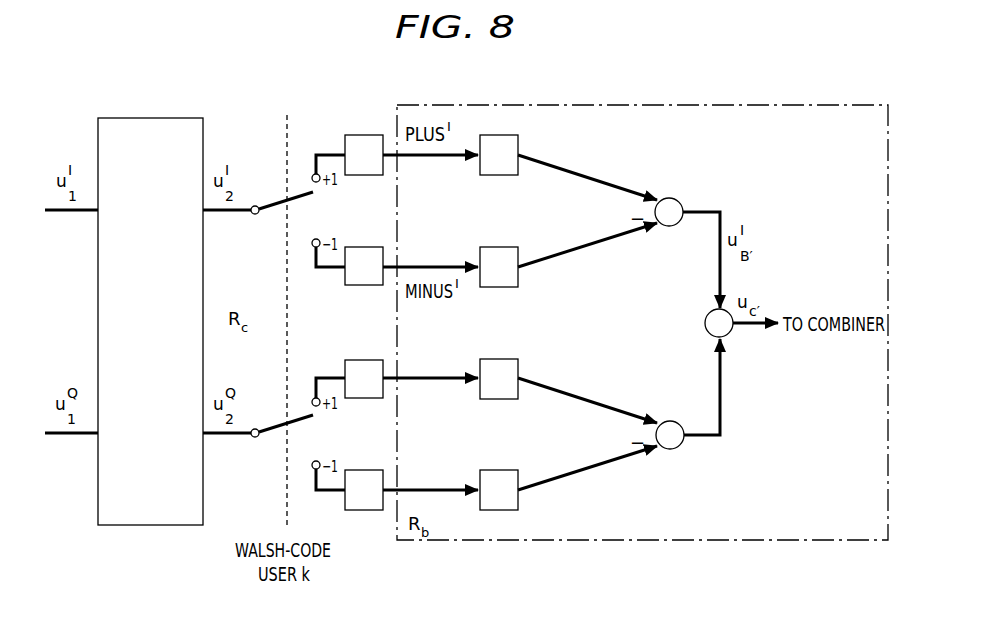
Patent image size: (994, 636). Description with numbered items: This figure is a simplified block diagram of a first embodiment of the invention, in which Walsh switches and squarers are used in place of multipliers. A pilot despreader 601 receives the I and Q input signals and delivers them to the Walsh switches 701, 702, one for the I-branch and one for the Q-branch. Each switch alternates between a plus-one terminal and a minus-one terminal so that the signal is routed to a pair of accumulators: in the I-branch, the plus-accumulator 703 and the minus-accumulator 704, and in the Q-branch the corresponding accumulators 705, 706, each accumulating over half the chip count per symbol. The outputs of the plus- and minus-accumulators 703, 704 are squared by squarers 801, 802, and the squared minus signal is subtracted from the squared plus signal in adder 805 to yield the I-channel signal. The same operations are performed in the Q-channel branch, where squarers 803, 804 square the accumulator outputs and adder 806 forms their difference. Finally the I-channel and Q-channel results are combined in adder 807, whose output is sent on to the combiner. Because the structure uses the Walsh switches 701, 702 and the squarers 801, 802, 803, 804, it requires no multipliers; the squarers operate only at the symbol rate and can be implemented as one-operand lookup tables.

The pilot despreader 601 is at (158, 525).
The Walsh switch 701 is at (264, 204).
The Walsh switch 702 is at (264, 427).
The plus-accumulator 703 is at (345, 139).
The minus-accumulator 704 is at (345, 284).
The accumulator 705 is at (345, 363).
The accumulator 706 is at (363, 510).
The squarer 801 is at (520, 143).
The squarer 802 is at (501, 247).
The squarer 803 is at (501, 359).
The squarer 804 is at (501, 470).
The adder 805 is at (681, 201).
The adder 806 is at (682, 446).
The adder 807 is at (731, 334).